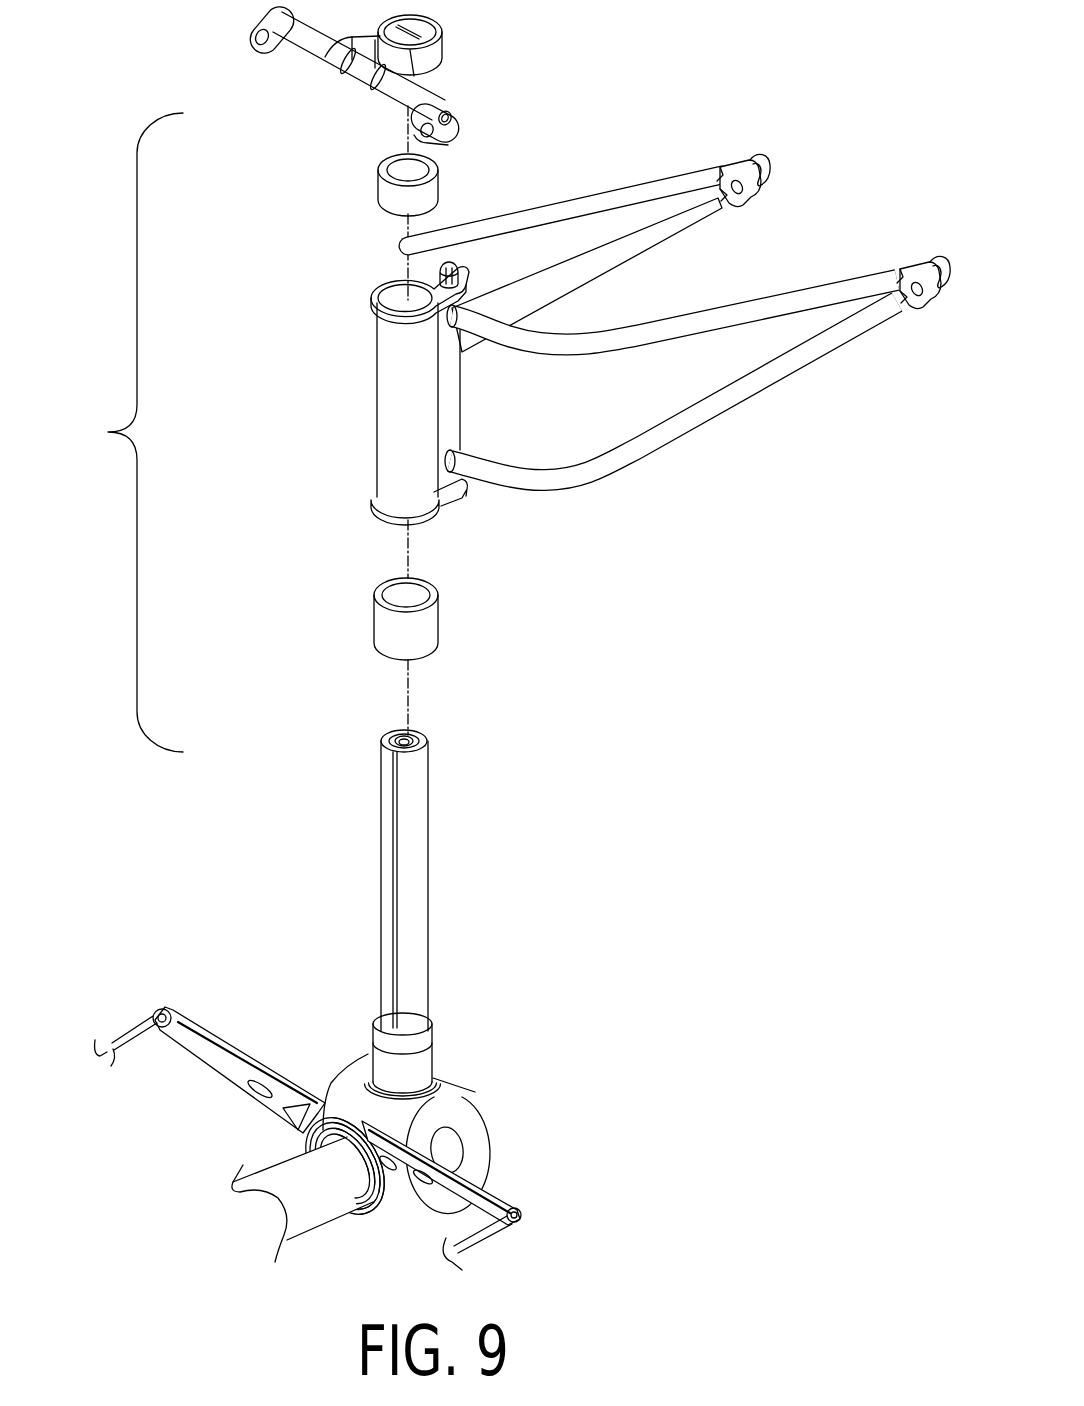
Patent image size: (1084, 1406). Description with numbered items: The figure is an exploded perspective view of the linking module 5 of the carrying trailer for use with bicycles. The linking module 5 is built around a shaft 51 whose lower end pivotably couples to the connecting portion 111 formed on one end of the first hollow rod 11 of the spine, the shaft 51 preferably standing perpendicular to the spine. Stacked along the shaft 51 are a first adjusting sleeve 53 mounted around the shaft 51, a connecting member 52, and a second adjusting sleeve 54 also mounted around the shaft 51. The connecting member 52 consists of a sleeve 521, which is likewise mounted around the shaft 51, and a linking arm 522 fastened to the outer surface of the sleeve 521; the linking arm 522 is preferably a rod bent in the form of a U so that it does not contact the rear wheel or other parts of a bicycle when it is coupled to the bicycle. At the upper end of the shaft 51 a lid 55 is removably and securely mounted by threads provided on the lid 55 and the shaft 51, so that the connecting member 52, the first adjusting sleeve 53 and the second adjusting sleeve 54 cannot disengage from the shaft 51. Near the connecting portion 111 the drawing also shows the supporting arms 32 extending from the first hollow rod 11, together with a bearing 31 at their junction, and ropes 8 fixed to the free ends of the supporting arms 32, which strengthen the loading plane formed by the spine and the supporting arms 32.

The linking module 5 is at (69, 459).
The lid 55 is at (360, 38).
The second adjusting sleeve 54 is at (378, 193).
The connecting member 52 is at (375, 403).
The sleeve 521 is at (398, 490).
The linking arm 522 is at (675, 433).
The first adjusting sleeve 53 is at (388, 625).
The shaft 51 is at (385, 847).
The connecting portion 111 is at (468, 1108).
The first hollow rod 11 is at (233, 1187).
The bearing 31 is at (370, 1214).
The supporting arms 32 is at (228, 1045).
The ropes 8 is at (130, 1036).